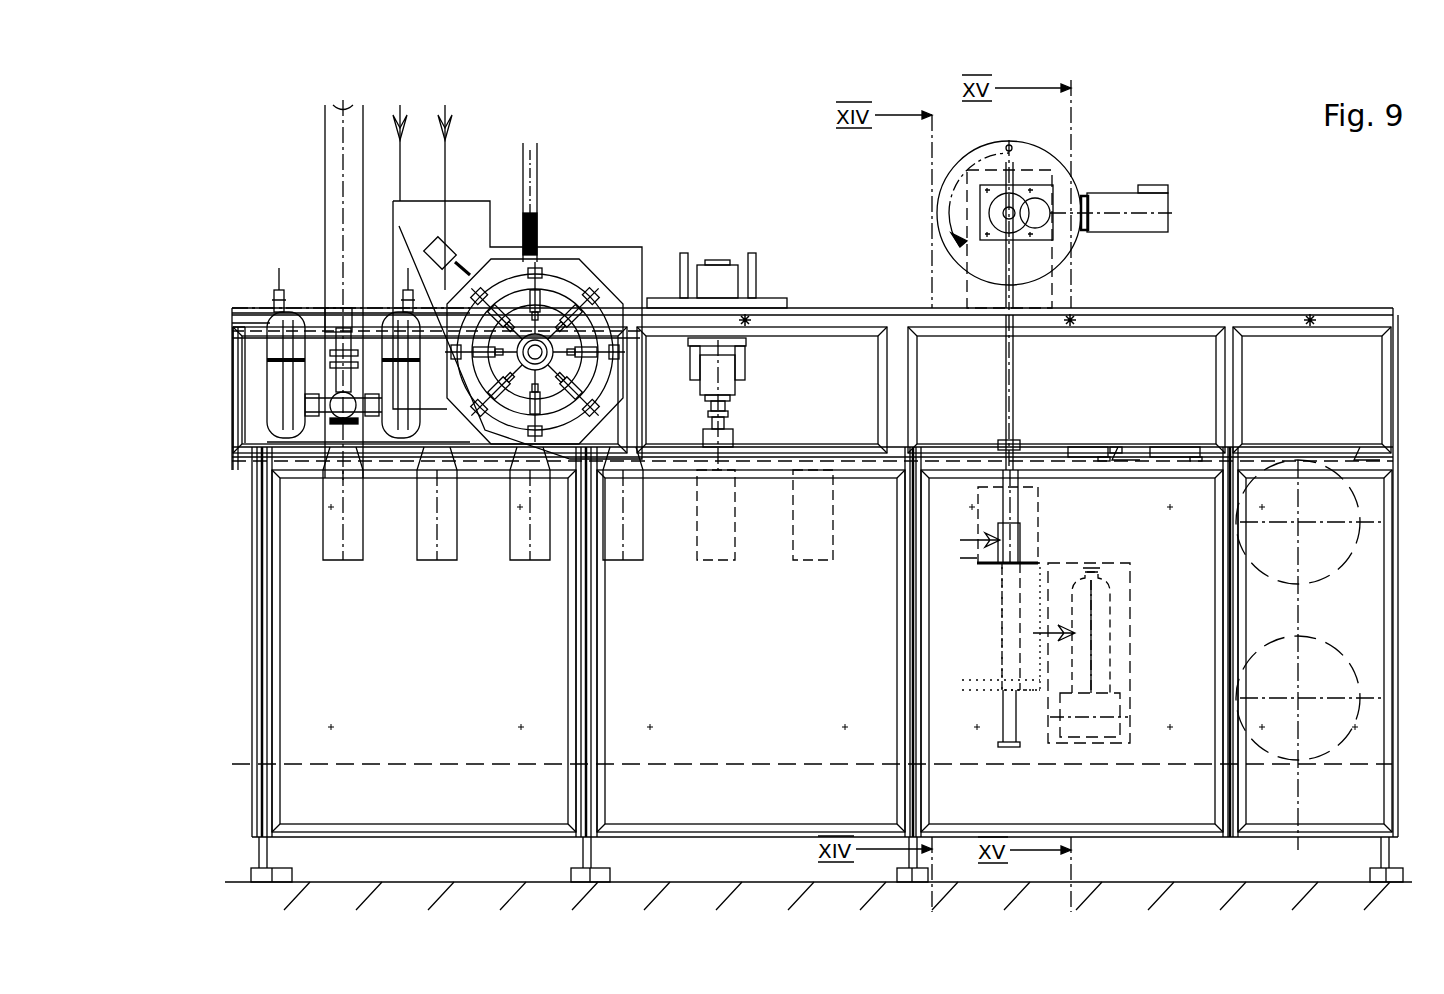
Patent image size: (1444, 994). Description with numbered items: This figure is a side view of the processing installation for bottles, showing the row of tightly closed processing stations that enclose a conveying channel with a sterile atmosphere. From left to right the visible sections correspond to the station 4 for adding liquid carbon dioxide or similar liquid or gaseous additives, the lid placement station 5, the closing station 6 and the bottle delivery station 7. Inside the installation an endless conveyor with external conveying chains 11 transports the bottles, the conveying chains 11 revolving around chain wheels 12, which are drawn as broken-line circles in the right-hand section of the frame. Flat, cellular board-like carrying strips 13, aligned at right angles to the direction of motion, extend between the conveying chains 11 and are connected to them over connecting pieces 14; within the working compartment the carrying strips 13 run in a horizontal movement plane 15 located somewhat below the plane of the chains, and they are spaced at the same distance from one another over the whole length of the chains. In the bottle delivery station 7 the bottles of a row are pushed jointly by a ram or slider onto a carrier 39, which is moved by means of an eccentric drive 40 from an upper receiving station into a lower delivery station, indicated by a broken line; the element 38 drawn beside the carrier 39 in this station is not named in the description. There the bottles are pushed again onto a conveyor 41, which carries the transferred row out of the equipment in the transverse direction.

The station for adding liquid carbon dioxide 4 is at (365, 657).
The lid placement station 5 is at (522, 657).
The closing station 6 is at (733, 632).
The bottle delivery station 7 is at (973, 770).
The conveying chains 11 is at (1097, 764).
The chain wheels 12 is at (1318, 647).
The carrying strips 13 is at (1072, 447).
The connecting pieces 14 is at (1160, 447).
The horizontal movement plane 15 is at (1133, 451).
The filling head plate 38 is at (980, 564).
The carrier 39 is at (1028, 563).
The eccentric drive 40 is at (947, 258).
The conveyor 41 is at (1105, 702).